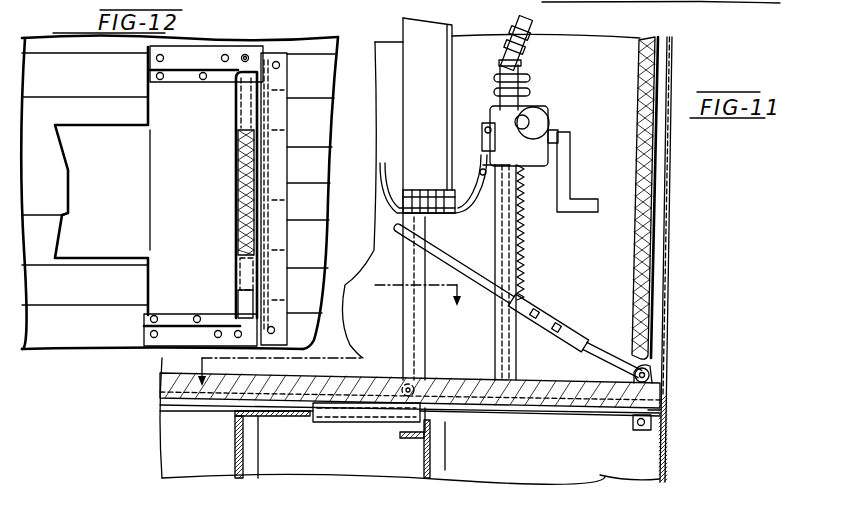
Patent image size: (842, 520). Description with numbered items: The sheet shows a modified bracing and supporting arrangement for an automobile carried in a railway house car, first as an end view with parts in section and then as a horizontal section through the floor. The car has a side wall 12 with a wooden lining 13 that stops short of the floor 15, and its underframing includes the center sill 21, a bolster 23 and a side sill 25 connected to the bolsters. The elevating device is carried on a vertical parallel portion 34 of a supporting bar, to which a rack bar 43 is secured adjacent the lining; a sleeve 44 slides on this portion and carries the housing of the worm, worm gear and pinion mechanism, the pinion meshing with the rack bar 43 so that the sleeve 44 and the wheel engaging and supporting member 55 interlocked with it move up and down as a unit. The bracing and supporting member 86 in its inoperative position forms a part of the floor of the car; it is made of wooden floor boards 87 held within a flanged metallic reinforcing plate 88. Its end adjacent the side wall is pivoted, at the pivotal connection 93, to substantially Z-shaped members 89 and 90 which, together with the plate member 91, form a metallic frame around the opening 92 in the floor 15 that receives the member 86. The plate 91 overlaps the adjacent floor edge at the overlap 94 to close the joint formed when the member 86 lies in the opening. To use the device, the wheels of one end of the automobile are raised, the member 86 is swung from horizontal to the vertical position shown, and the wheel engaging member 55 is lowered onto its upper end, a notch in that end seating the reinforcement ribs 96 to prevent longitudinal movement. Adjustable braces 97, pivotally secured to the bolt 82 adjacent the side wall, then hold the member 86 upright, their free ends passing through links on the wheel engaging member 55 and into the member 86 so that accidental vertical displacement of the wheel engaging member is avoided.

In FIG. 11, the side wall 12 is at (410, 384).
In FIG. 11, the wooden lining 13 is at (645, 60).
In FIG. 12, the floor 15 is at (178, 181).
In FIG. 11, the center sill 21 is at (203, 455).
In FIG. 11, the bolster 23 is at (290, 455).
In FIG. 11, the side sill 25 is at (664, 466).
In FIG. 11, the parallel portion 34 is at (517, 362).
In FIG. 11, the rack bar 43 is at (524, 252).
In FIG. 11, the sleeve 44 is at (504, 122).
In FIG. 11, the wheel engaging and supporting member 55 is at (452, 215).
In FIG. 11, the bolt 82 is at (634, 371).
In FIG. 11, the bracing and supporting member 86 is at (412, 343).
In FIG. 12, the wooden floor boards 87 is at (253, 152).
In FIG. 12, the flanged metallic reinforcing plate 88 is at (247, 120).
In FIG. 12, the Z-shaped member 89 is at (233, 57).
In FIG. 12, the Z-shaped member 90 is at (173, 333).
In FIG. 12, the plate member 91 is at (270, 219).
In FIG. 12, the opening 92 is at (166, 190).
In FIG. 12, the pivotal connection 93 is at (256, 60).
In FIG. 11, the pivotal connection 93 is at (411, 398).
In FIG. 12, the overlap 94 is at (266, 178).
In FIG. 11, the reinforcement ribs 96 is at (461, 211).
In FIG. 11, the adjustable brace 97 is at (588, 340).